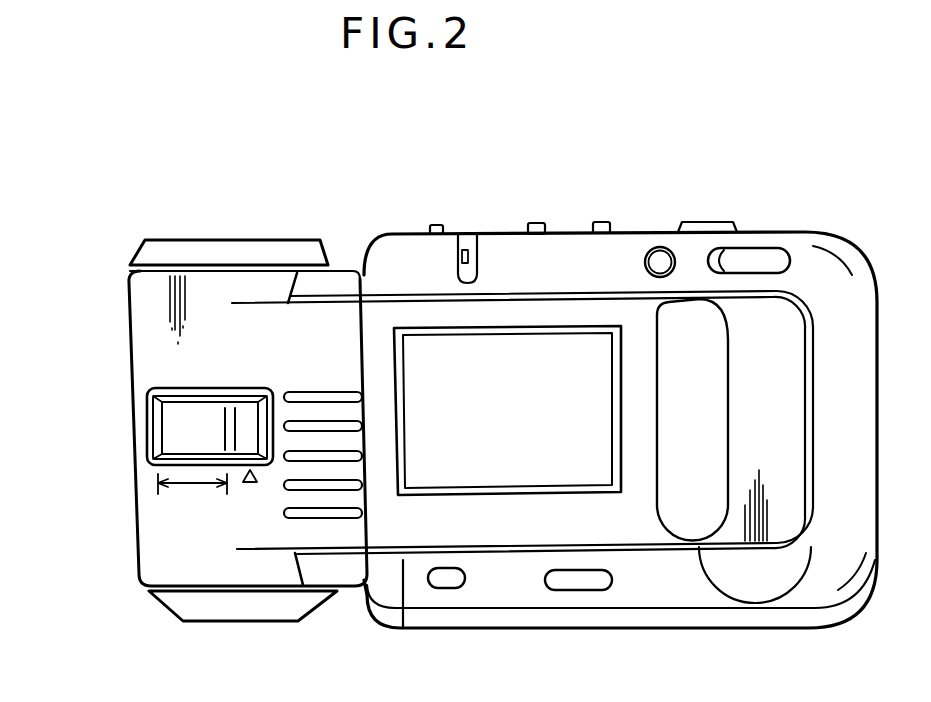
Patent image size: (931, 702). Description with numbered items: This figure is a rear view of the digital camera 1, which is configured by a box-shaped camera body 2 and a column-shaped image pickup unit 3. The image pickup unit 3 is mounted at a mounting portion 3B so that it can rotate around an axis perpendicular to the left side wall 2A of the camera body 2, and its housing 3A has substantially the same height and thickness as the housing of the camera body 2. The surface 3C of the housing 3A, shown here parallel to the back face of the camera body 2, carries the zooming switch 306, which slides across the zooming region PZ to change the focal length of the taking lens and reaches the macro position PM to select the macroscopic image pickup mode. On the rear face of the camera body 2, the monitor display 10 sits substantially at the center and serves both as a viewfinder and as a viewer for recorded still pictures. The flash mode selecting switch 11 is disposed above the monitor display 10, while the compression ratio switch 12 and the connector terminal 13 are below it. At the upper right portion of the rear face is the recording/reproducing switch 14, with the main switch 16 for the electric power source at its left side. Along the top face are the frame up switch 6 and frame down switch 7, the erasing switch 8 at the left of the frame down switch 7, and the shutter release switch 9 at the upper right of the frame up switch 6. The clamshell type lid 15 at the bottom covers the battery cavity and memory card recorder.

The digital camera 1 is at (580, 110).
The camera body 2 is at (670, 210).
The left side wall 2A is at (355, 263).
The image pickup unit 3 is at (264, 218).
The housing 3A is at (152, 337).
The mounting portion 3B is at (339, 283).
The surface 3C is at (157, 510).
The zooming switch 306 is at (173, 435).
The frame up switch 6 is at (607, 224).
The frame down switch 7 is at (541, 225).
The erasing switch 8 is at (436, 226).
The shutter release switch 9 is at (705, 222).
The monitor display 10 is at (553, 360).
The flash mode selecting switch 11 is at (482, 250).
The compression ratio switch 12 is at (445, 588).
The connector terminal 13 is at (582, 590).
The recording/reproducing switch 14 is at (765, 260).
The clamshell type lid 15 is at (690, 610).
The main switch 16 is at (660, 278).